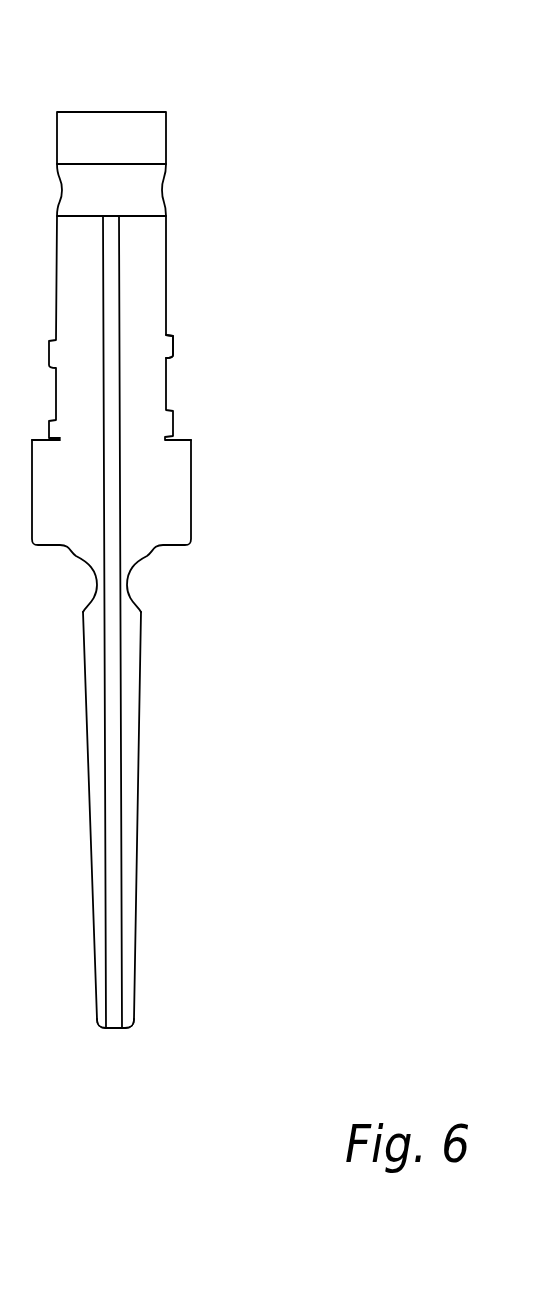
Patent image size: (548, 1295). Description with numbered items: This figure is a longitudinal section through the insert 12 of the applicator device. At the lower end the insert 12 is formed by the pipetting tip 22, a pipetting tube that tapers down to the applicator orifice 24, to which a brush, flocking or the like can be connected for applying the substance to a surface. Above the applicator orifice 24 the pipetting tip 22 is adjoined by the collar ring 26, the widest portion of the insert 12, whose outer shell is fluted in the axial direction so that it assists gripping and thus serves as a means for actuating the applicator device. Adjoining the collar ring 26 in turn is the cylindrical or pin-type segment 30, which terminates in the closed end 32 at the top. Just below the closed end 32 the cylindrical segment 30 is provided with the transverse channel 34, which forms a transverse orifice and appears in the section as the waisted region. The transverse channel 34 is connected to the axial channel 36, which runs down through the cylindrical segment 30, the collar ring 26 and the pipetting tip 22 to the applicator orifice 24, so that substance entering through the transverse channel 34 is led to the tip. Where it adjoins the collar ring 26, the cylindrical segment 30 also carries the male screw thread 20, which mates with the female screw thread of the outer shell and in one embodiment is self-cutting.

The insert 12 is at (330, 105).
The male screw thread 20 is at (173, 346).
The pipetting tip 22 is at (135, 886).
The applicator orifice 24 is at (118, 1028).
The collar ring 26 is at (192, 487).
The cylindrical segment 30 is at (166, 277).
The closed end 32 is at (101, 110).
The transverse channel 34 is at (147, 193).
The axial channel 36 is at (112, 660).